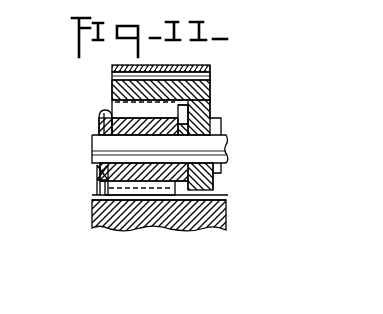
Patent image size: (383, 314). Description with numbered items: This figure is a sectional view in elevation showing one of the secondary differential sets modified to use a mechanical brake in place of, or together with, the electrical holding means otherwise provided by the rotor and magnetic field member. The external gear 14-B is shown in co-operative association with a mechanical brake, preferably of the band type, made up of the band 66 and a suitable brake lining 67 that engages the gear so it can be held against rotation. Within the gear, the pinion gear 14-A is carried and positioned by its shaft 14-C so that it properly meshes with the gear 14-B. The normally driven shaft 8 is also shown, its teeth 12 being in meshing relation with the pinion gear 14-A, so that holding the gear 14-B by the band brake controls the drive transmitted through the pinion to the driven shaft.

The band 66 is at (212, 66).
The brake lining 67 is at (212, 75).
The external gear 14-B is at (212, 97).
The shaft 14-C is at (132, 145).
The pinion gear 14-A is at (100, 174).
The teeth 12 is at (218, 199).
The normally driven shaft 8 is at (163, 222).